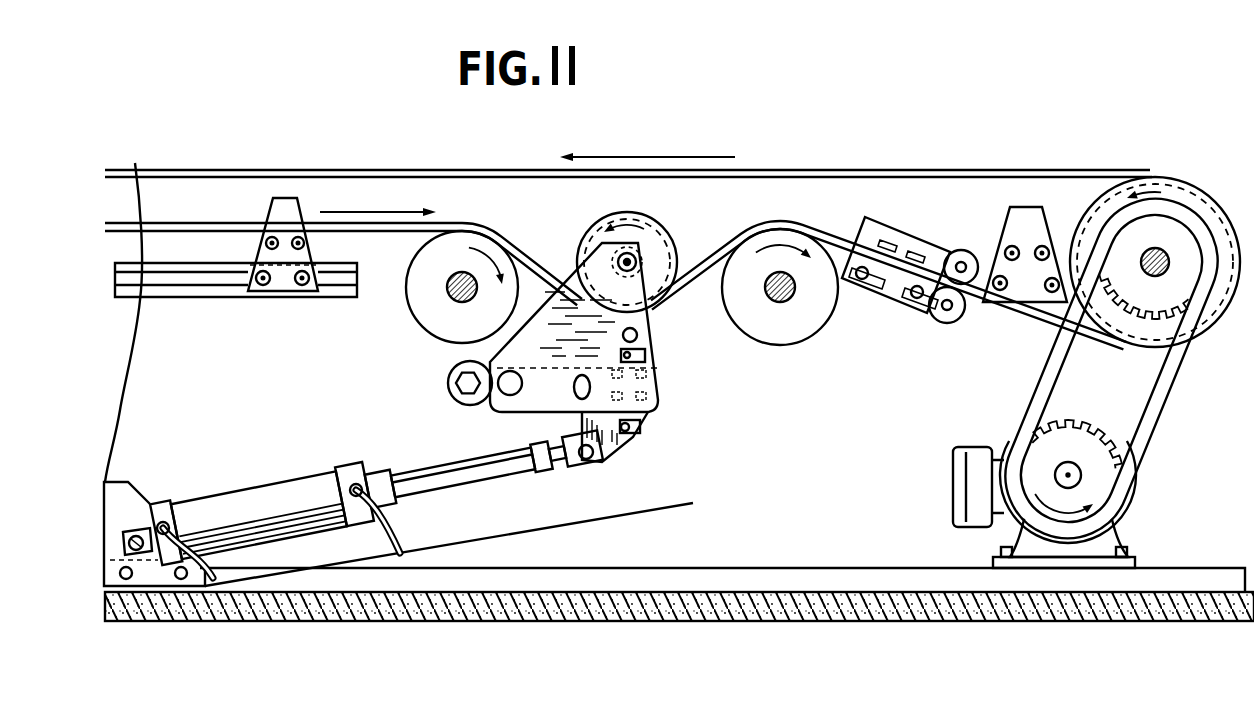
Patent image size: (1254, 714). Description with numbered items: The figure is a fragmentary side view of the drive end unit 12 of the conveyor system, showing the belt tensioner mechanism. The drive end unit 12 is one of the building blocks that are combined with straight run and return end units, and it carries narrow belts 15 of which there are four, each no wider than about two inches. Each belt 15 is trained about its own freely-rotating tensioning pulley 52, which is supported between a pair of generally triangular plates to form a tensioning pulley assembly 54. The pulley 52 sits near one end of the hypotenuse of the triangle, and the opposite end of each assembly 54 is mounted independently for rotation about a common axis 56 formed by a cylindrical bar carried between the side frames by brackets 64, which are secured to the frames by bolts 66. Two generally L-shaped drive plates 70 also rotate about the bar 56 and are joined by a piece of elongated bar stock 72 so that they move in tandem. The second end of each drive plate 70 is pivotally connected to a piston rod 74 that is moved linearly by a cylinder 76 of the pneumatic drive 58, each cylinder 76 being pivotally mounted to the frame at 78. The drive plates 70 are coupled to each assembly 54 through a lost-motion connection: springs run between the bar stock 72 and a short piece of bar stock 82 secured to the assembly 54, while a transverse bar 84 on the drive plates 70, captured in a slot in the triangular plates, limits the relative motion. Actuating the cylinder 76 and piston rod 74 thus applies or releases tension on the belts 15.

The drive end unit 12 is at (1178, 163).
The belt 15 is at (889, 180).
The tensioning pulley 52 is at (665, 224).
The tensioning pulley assembly 54 is at (570, 356).
The common axis 56 is at (493, 403).
The pneumatic drive 58 is at (353, 492).
The bracket 64 is at (468, 363).
The bolt 66 is at (456, 383).
The drive plate 70 is at (603, 465).
The elongated bar stock 72 is at (634, 445).
The piston rod 74 is at (428, 497).
The cylinder 76 is at (300, 510).
The pivotal mount 78 is at (138, 536).
The short piece of bar stock 82 is at (648, 357).
The transverse bar 84 is at (580, 375).